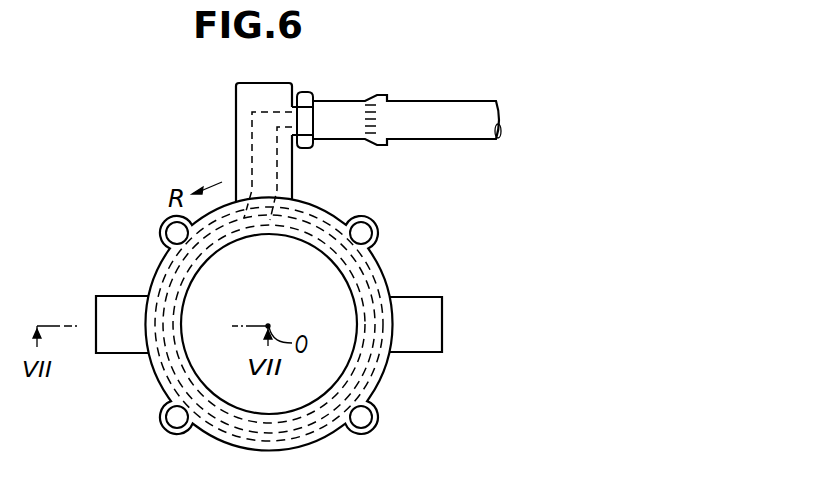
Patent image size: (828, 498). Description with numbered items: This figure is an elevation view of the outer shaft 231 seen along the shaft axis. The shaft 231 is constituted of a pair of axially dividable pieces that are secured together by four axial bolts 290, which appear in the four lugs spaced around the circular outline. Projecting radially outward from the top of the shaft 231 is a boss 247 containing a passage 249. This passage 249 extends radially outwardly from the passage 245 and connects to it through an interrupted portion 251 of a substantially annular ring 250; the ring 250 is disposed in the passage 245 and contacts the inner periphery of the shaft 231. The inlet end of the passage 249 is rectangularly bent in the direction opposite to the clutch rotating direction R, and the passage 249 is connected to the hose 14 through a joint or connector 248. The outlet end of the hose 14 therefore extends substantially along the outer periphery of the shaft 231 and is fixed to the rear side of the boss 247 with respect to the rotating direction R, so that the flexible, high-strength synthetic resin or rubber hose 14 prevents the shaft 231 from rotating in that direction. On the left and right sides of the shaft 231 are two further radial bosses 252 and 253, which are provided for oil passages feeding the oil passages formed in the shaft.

The hose 14 is at (413, 107).
The outer shaft 231 is at (388, 265).
The passage 245 is at (322, 220).
The boss 247 is at (242, 163).
The joint or connector 248 is at (304, 93).
The passage 249 is at (254, 176).
The annular ring 250 is at (318, 220).
The interrupted portion 251 is at (291, 189).
The radial boss 252 is at (434, 311).
The radial boss 253 is at (113, 304).
The axial bolts 290 is at (166, 232).